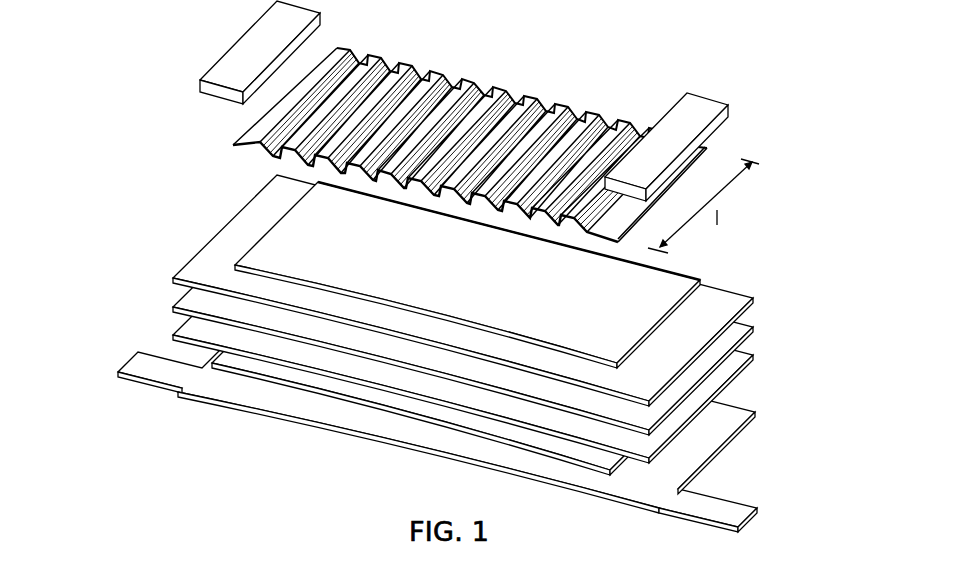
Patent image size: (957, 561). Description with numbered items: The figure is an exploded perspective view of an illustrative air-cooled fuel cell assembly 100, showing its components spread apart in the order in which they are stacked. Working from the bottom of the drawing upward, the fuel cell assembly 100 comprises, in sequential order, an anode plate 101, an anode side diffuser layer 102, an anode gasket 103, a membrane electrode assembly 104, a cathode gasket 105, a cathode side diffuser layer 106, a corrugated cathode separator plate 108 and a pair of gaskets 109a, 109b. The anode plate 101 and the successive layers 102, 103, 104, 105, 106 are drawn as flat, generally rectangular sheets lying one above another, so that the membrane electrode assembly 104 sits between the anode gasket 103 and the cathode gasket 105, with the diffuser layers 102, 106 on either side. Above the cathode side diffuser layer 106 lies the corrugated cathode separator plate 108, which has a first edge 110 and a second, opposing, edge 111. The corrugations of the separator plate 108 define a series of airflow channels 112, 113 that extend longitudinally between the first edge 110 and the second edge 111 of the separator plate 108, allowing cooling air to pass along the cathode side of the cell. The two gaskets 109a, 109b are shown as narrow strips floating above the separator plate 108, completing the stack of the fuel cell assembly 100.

The fuel cell assembly 100 is at (575, 84).
The anode plate 101 is at (725, 430).
The anode side diffuser layer 102 is at (278, 372).
The anode gasket 103 is at (740, 356).
The membrane electrode assembly 104 is at (740, 326).
The cathode gasket 105 is at (733, 298).
The cathode side diffuser layer 106 is at (660, 280).
The corrugated cathode separator plate 108 is at (593, 234).
The gasket 109a is at (700, 112).
The gasket 109b is at (230, 68).
The first edge 110 is at (270, 157).
The second edge 111 is at (460, 134).
The airflow channel 112 is at (468, 202).
The airflow channel 113 is at (515, 100).